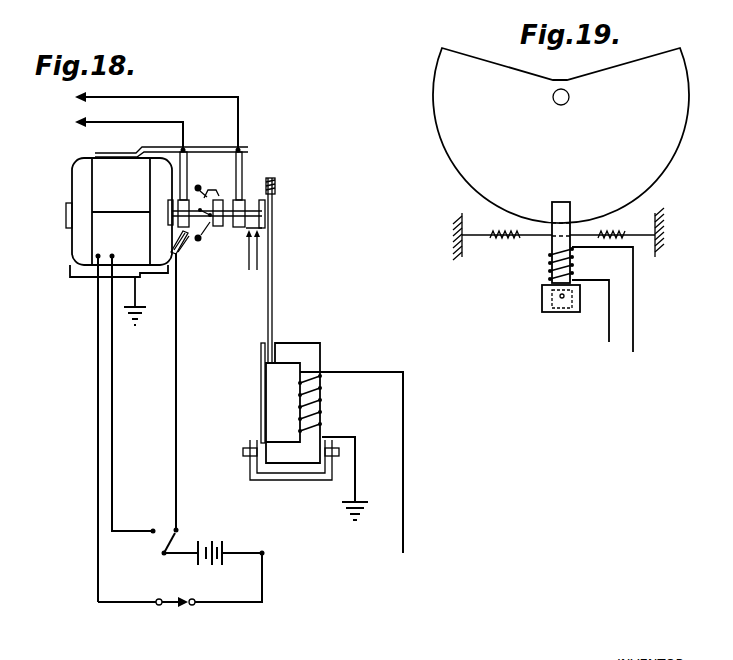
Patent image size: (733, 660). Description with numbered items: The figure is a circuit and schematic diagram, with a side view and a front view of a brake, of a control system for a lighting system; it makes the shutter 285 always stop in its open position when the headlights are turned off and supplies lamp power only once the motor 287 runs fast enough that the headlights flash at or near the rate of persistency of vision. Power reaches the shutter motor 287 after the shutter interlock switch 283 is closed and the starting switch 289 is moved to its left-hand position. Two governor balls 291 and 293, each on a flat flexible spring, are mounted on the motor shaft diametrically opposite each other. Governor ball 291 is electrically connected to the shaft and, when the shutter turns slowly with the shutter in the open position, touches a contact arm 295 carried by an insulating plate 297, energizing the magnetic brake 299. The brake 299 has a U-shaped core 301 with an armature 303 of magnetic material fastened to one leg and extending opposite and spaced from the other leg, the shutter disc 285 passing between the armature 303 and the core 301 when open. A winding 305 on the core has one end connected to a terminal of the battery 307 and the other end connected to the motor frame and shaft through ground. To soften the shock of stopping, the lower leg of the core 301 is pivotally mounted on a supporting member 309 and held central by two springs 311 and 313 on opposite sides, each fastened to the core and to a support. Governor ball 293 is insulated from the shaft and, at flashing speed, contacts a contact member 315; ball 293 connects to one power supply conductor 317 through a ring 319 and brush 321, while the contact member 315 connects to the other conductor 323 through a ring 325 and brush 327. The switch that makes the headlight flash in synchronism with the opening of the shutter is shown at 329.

In FIG. 18, the shutter interlock switch 283 is at (175, 607).
In FIG. 18, the shutter disc 285 is at (273, 284).
In FIG. 19, the shutter disc 285 is at (452, 144).
In FIG. 18, the shutter motor 287 is at (75, 186).
In FIG. 18, the starting switch 289 is at (173, 542).
In FIG. 18, the governor ball 291 is at (203, 241).
In FIG. 18, the governor ball 293 is at (199, 185).
In FIG. 18, the contact arm 295 is at (184, 254).
In FIG. 18, the insulating plate 297 is at (172, 238).
In FIG. 18, the magnetic brake 299 is at (380, 361).
In FIG. 18, the U-shaped core 301 is at (308, 346).
In FIG. 19, the U-shaped core 301 is at (572, 207).
In FIG. 18, the armature 303 is at (261, 390).
In FIG. 18, the winding 305 is at (319, 384).
In FIG. 19, the winding 305 is at (552, 263).
In FIG. 18, the battery 307 is at (197, 562).
In FIG. 18, the supporting member 309 is at (297, 478).
In FIG. 19, the supporting member 309 is at (547, 303).
In FIG. 19, the spring 311 is at (498, 243).
In FIG. 19, the spring 313 is at (622, 231).
In FIG. 18, the contact member 315 is at (212, 197).
In FIG. 18, the power supply conductor 317 is at (107, 117).
In FIG. 18, the ring 319 is at (183, 208).
In FIG. 18, the brush 321 is at (186, 158).
In FIG. 18, the power supply conductor 323 is at (174, 97).
In FIG. 18, the ring 325 is at (242, 203).
In FIG. 18, the brush 327 is at (222, 192).
In FIG. 18, the switch 329 is at (262, 242).